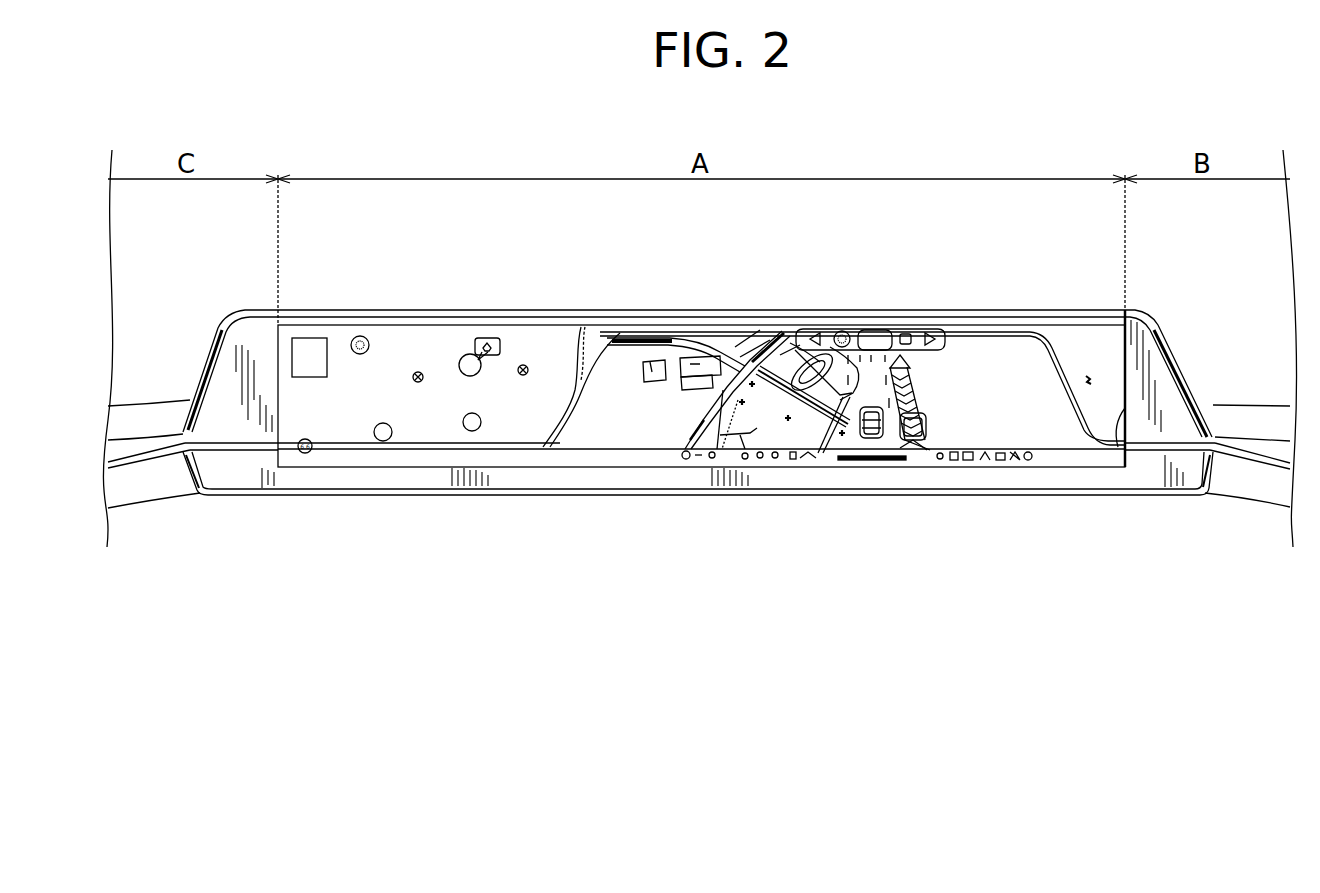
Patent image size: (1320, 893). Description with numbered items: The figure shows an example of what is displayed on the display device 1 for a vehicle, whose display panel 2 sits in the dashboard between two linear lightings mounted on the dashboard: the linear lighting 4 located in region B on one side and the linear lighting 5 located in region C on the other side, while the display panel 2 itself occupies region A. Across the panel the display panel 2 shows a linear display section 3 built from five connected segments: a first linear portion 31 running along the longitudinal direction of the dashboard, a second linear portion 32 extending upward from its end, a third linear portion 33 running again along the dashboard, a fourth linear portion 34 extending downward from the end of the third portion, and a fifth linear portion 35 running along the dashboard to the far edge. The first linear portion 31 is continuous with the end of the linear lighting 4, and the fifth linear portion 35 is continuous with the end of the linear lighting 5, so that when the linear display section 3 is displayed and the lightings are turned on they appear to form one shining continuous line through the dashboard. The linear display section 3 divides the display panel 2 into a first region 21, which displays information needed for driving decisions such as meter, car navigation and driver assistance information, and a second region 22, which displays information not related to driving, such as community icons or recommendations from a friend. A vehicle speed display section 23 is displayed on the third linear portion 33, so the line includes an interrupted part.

The display device 1 is at (1103, 121).
The display panel 2 is at (395, 309).
The linear display section 3 is at (580, 355).
The linear lighting 4 is at (1189, 450).
The linear lighting 5 is at (222, 450).
The first region 21 is at (809, 411).
The second region 22 is at (419, 384).
The vehicle speed display section 23 is at (880, 331).
The first linear portion 31 is at (1127, 407).
The second linear portion 32 is at (1065, 362).
The third linear portion 33 is at (737, 332).
The fourth linear portion 34 is at (568, 390).
The fifth linear portion 35 is at (452, 443).